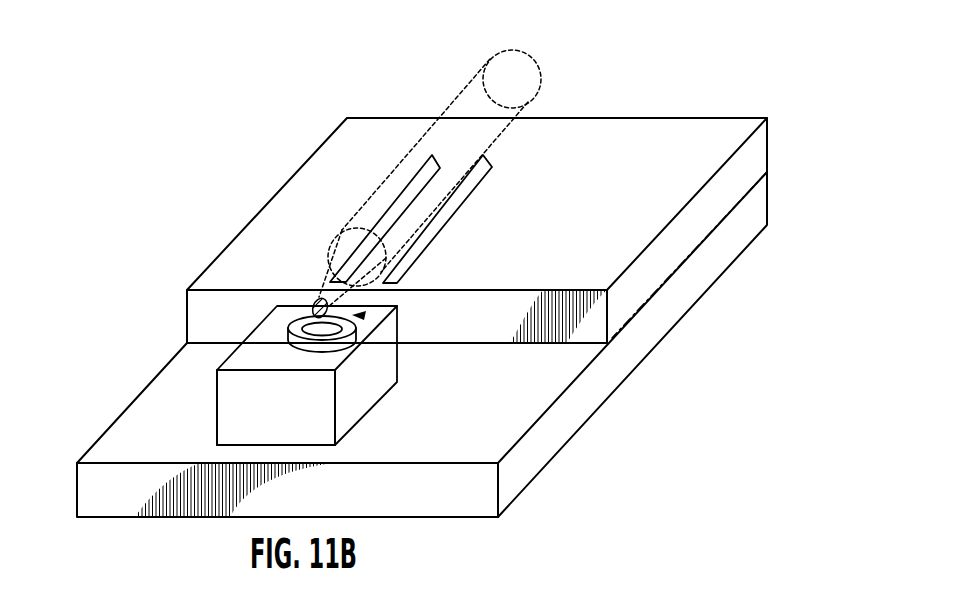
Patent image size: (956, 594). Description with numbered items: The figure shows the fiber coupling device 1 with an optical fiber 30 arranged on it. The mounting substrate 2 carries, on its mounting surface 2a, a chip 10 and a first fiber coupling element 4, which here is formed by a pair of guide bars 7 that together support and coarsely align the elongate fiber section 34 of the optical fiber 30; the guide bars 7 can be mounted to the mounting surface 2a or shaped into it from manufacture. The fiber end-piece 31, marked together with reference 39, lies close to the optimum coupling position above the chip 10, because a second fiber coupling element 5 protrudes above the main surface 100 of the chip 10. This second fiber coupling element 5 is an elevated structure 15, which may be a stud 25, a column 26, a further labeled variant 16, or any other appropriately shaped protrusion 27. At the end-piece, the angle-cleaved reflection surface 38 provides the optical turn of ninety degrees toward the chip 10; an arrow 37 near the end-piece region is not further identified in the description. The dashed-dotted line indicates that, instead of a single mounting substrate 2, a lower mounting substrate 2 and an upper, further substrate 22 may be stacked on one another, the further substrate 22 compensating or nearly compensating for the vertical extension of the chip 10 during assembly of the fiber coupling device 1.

The fiber coupling device 1 is at (438, 319).
The mounting substrate 2 is at (545, 438).
The mounting surface 2a is at (380, 453).
The further substrate 22 is at (710, 222).
The first fiber coupling element 4 is at (411, 219).
The guide bars 7 is at (391, 213).
The second fiber coupling element 5 is at (396, 362).
The elevated structure 15 is at (396, 362).
The sleeve 16 is at (396, 362).
The stud 25 is at (396, 362).
The column 26 is at (396, 362).
The protrusion 27 is at (353, 332).
The chip 10 is at (232, 411).
The main surface 100 is at (252, 360).
The optical fiber 30 is at (488, 161).
The elongate fiber section 34 is at (535, 88).
The fiber end-piece 31 is at (333, 249).
The focal region 39 is at (317, 287).
The feed direction arrow 37 is at (358, 316).
The angle-cleaved reflection surface 38 is at (313, 300).